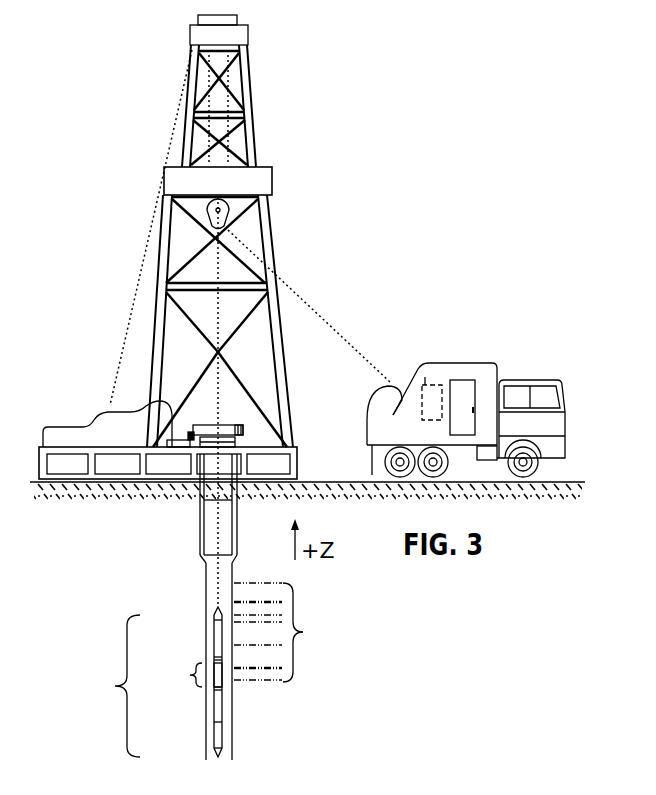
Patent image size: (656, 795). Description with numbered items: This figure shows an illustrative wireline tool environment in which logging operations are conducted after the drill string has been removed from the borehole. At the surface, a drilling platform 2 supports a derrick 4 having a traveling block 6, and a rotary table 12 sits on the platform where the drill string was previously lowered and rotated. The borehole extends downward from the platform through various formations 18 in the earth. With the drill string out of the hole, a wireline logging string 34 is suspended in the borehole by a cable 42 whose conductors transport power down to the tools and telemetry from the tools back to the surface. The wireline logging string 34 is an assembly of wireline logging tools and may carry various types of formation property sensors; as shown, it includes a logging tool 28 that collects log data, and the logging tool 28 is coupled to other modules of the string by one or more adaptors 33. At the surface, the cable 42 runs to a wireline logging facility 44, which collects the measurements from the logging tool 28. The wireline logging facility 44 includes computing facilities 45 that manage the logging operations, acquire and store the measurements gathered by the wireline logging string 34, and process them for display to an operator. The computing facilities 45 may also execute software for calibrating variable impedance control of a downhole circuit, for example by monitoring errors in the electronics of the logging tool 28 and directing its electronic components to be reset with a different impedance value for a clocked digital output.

The drilling platform 2 is at (297, 462).
The derrick 4 is at (284, 412).
The traveling block 6 is at (229, 210).
The rotary table 12 is at (233, 425).
The formations 18 is at (282, 632).
The logging tool 28 is at (188, 678).
The adaptors 33 is at (222, 658).
The wireline logging string 34 is at (151, 682).
The cable 42 is at (285, 285).
The wireline logging facility 44 is at (490, 363).
The computing facilities 45 is at (422, 363).